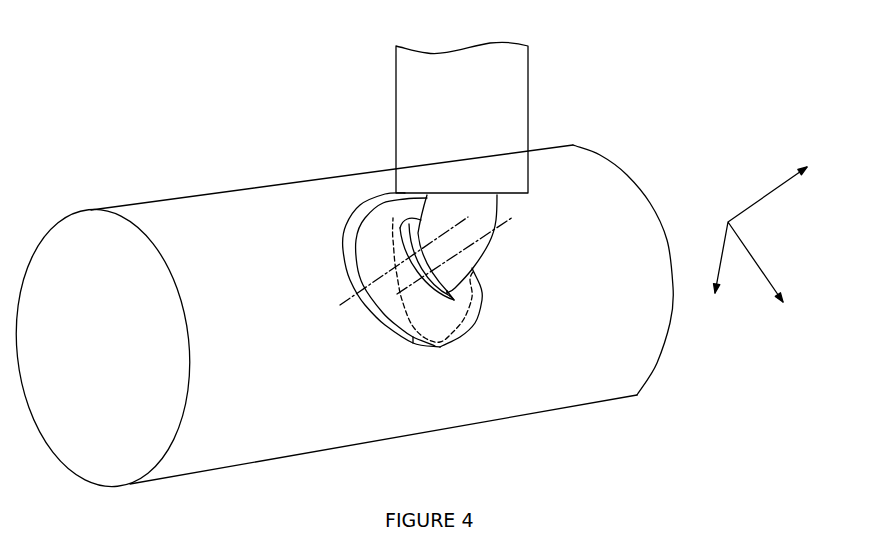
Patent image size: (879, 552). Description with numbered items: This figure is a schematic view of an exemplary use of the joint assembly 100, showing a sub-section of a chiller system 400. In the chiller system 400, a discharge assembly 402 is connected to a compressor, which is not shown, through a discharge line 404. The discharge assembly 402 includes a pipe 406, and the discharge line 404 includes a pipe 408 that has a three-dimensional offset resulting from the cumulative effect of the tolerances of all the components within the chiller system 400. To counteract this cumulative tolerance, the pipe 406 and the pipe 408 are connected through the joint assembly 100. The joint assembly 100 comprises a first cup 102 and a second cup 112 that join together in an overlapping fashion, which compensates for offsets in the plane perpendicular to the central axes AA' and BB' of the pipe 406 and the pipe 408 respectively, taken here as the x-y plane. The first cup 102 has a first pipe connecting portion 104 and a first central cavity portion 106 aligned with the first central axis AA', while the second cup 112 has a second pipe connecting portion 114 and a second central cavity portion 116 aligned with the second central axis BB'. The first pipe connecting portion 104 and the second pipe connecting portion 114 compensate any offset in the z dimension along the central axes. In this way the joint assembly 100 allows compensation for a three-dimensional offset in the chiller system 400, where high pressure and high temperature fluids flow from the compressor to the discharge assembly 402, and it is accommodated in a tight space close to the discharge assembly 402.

The chiller system 400 is at (313, 87).
The discharge assembly 402 is at (137, 203).
The discharge line 404 is at (528, 102).
The pipe 408 is at (503, 208).
The joint assembly 100 is at (322, 223).
The first cup 102 is at (363, 197).
The first pipe connecting portion 104 is at (397, 243).
The first central cavity portion 106 is at (418, 302).
The second cup 112 is at (475, 329).
The second pipe connecting portion 114 is at (465, 280).
The second central cavity portion 116 is at (458, 295).
The pipe 406 is at (397, 272).